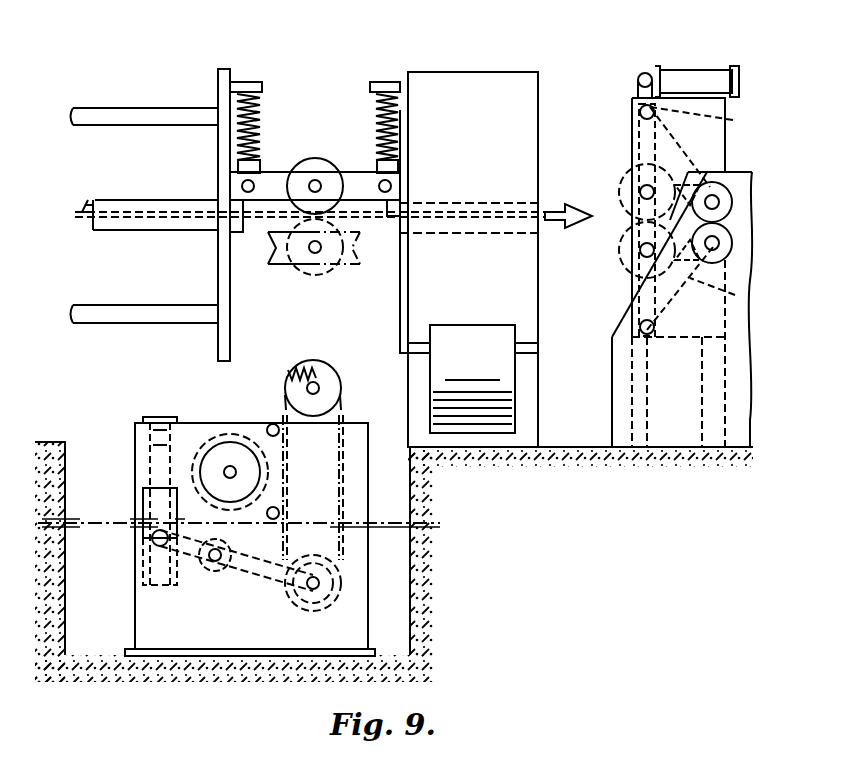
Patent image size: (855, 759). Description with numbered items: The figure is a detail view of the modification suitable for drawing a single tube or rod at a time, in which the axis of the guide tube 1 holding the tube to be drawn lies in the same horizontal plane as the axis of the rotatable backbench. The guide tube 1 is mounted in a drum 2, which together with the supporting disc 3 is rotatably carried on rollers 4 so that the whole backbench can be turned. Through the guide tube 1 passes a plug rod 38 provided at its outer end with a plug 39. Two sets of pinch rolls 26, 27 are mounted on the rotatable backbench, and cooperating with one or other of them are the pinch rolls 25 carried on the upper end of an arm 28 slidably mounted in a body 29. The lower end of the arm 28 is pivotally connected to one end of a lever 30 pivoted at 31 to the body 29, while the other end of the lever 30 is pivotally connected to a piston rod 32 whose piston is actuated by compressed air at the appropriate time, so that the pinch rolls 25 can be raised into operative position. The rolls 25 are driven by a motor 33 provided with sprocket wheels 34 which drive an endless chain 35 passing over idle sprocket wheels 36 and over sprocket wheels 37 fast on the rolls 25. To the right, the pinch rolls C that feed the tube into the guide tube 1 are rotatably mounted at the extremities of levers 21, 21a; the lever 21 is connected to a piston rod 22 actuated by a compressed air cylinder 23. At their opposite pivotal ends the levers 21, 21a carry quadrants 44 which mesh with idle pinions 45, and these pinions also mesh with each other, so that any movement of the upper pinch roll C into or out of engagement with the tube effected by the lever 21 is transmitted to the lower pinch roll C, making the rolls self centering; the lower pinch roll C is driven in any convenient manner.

The guide tube 1 is at (160, 206).
The drum 2 is at (478, 78).
The supporting disc 3 is at (218, 284).
The roller 4 is at (512, 362).
The lever 21 is at (636, 142).
The lever 21a is at (645, 292).
The piston rod 22 is at (638, 88).
The compressed air cylinder 23 is at (708, 74).
The pinch rolls 25 is at (306, 364).
The pinch rolls 26 is at (305, 272).
The pinch rolls 27 is at (336, 156).
The arm 28 is at (330, 392).
The body 29 is at (276, 640).
The lever 30 is at (272, 578).
The pivot 31 is at (214, 565).
The piston rod 32 is at (158, 478).
The motor 33 is at (195, 432).
The sprocket wheels 34 is at (232, 436).
The endless chain 35 is at (290, 398).
The idle sprocket wheels 36 is at (273, 426).
The sprocket wheels 37 is at (330, 368).
The plug rods 38 is at (89, 193).
The plug 39 is at (578, 208).
The quadrant 44 is at (702, 218).
The idle pinions 45 is at (702, 222).
The pinch rolls C is at (628, 238).